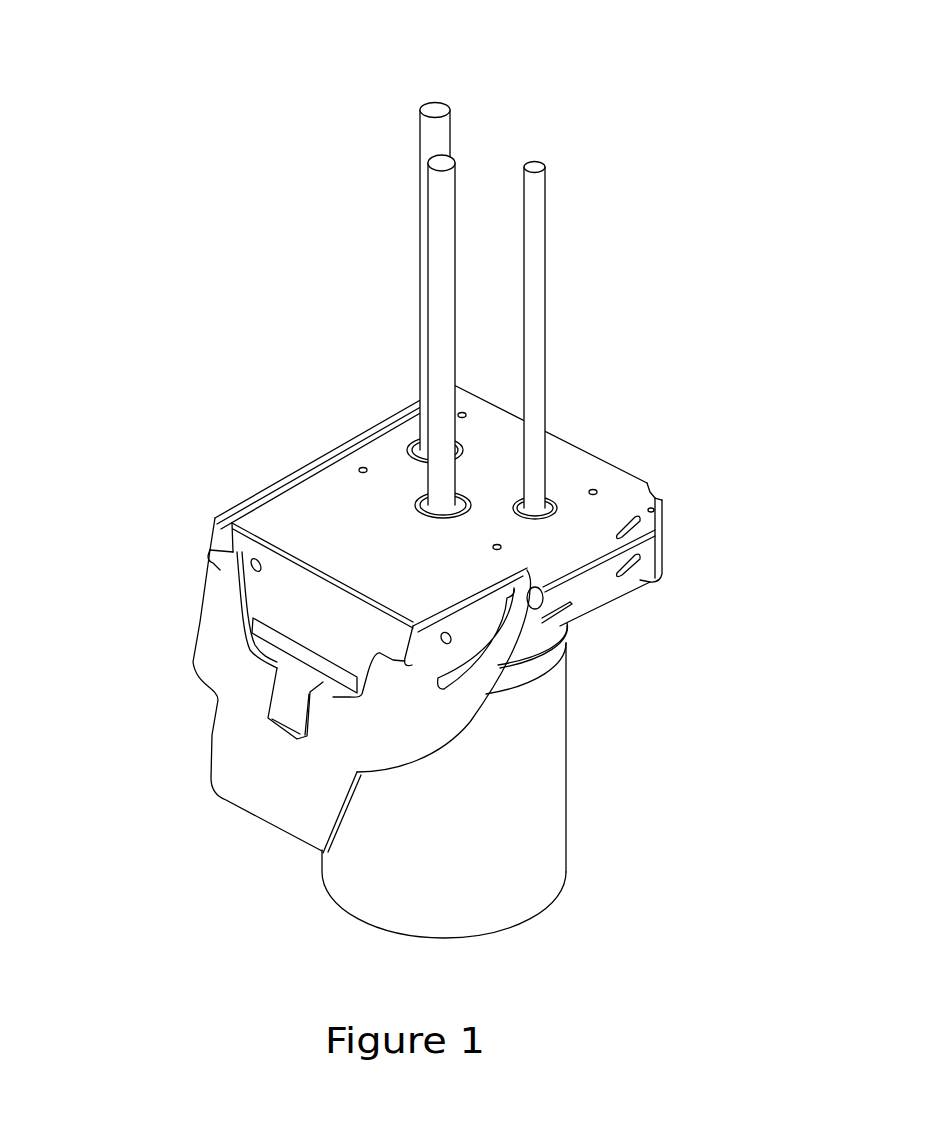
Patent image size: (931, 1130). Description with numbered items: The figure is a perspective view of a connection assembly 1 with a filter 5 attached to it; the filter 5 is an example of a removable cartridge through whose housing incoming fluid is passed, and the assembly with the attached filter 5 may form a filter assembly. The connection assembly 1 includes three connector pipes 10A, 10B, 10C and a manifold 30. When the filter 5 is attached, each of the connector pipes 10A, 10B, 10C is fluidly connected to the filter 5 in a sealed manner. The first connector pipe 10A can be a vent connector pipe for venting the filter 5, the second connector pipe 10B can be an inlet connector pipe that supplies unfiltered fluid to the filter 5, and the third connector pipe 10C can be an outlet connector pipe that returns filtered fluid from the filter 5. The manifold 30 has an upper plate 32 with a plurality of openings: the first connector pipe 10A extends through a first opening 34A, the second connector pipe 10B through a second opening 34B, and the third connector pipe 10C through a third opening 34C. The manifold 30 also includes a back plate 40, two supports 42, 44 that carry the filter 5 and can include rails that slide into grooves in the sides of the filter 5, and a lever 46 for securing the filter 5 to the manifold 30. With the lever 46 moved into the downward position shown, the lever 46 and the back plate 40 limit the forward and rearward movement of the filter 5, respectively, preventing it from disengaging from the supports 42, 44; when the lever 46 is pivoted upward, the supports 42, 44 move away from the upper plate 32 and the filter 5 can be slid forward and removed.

The connection assembly 1 is at (188, 117).
The filter 5 is at (567, 760).
The first connector pipe 10A is at (543, 207).
The second connector pipe 10B is at (420, 130).
The third connector pipe 10C is at (453, 170).
The manifold 30 is at (650, 480).
The upper plate 32 is at (273, 517).
The first opening 34A is at (560, 513).
The second opening 34B is at (403, 462).
The third opening 34C is at (407, 515).
The back plate 40 is at (662, 537).
The support 42 is at (603, 580).
The support 44 is at (290, 553).
The lever 46 is at (243, 765).